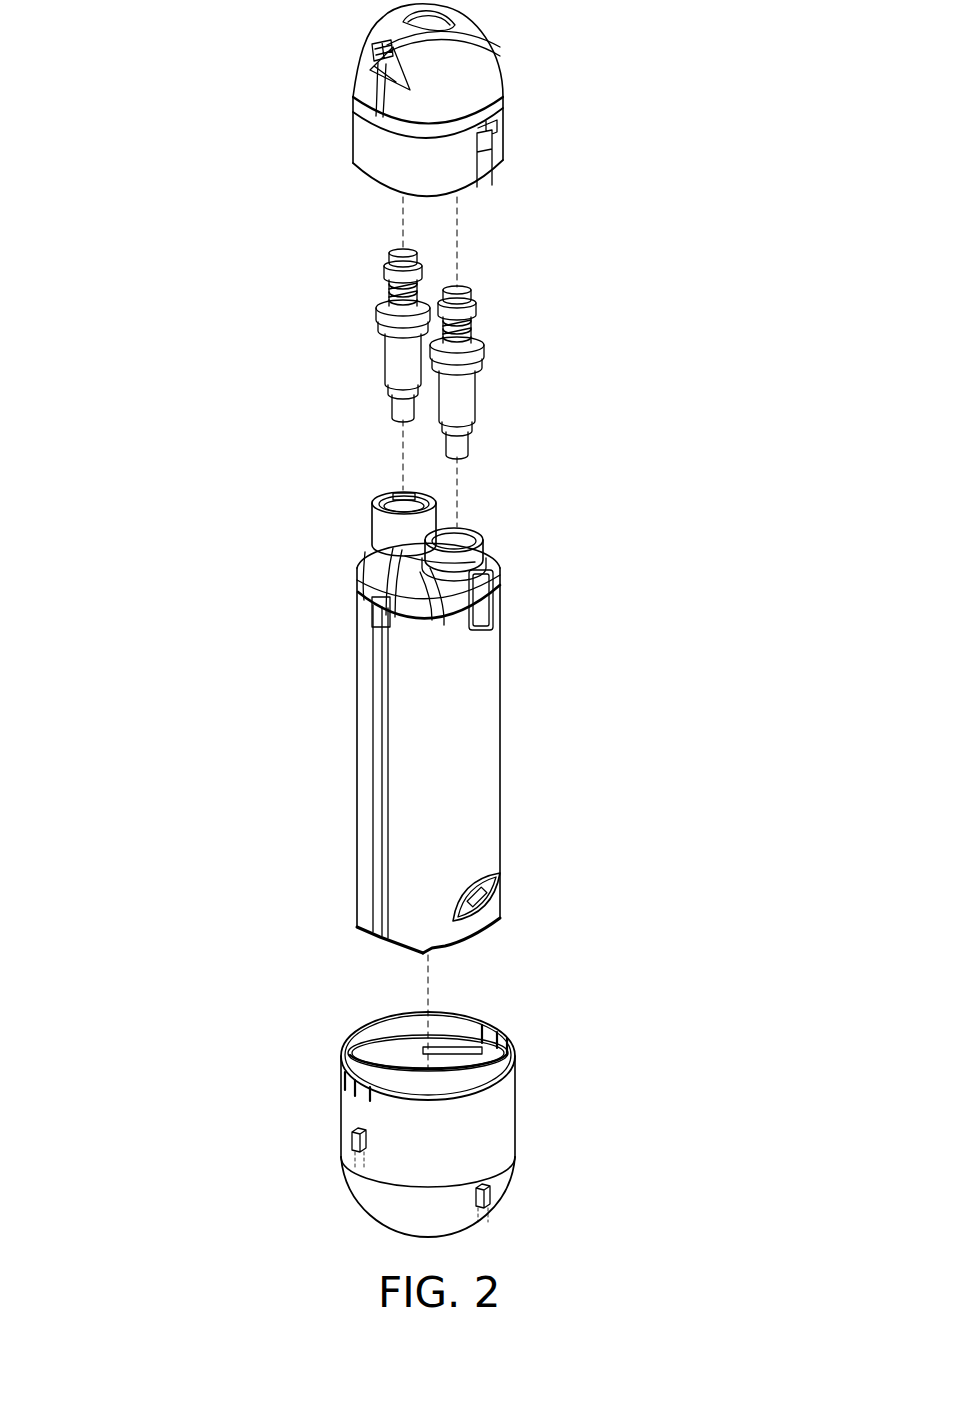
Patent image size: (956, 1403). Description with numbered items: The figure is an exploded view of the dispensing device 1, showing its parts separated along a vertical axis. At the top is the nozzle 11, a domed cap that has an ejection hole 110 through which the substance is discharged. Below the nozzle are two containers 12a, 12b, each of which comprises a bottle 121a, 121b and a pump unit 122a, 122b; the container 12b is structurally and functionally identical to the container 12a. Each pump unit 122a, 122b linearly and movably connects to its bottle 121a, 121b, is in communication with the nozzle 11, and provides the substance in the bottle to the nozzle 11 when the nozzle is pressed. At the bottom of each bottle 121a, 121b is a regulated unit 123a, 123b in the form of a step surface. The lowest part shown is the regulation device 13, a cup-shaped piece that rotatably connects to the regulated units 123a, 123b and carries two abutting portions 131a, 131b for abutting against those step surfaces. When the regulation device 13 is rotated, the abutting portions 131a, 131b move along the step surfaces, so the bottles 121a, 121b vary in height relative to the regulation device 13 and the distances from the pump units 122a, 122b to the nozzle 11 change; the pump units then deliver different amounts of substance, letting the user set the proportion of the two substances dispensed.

The dispensing device 1 is at (100, 25).
The nozzle 11 is at (425, 145).
The ejection hole 110 is at (372, 47).
The container 12a is at (510, 634).
The container 12b is at (292, 601).
The bottle 121a is at (460, 722).
The bottle 121b is at (372, 672).
The pump unit 122a is at (462, 402).
The pump unit 122b is at (400, 356).
The regulated unit 123a is at (501, 914).
The regulated unit 123b is at (335, 914).
The regulation device 13 is at (429, 1096).
The abutting portion 131a is at (492, 1192).
The abutting portion 131b is at (355, 1145).